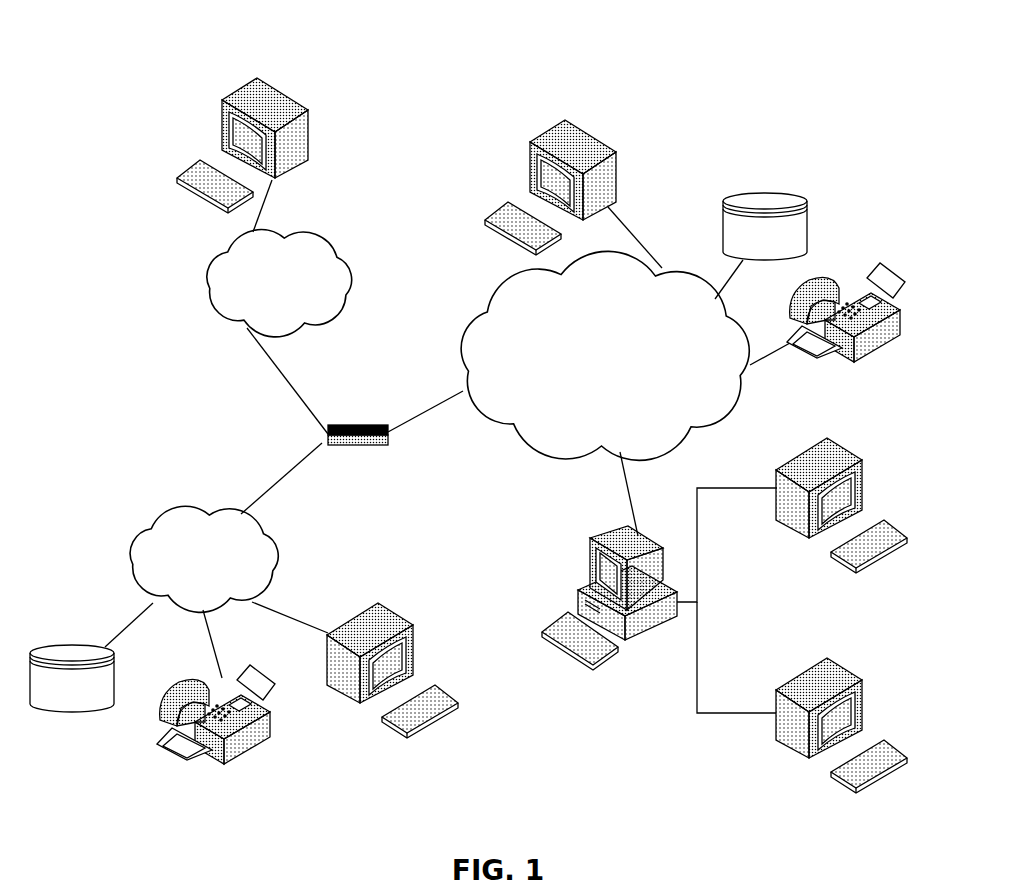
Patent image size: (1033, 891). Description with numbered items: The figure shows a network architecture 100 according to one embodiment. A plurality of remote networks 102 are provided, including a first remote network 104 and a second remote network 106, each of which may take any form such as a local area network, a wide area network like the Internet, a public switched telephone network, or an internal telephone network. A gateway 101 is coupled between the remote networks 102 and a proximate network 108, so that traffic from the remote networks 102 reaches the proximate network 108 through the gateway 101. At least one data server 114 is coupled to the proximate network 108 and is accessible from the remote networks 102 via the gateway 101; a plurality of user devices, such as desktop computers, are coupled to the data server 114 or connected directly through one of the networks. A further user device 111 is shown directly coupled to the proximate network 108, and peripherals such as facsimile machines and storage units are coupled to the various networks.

The architecture 100 is at (145, 58).
The gateway 101 is at (338, 423).
The remote networks 102 is at (180, 344).
The first remote network 104 is at (132, 534).
The second remote network 106 is at (348, 254).
The proximate network 108 is at (712, 423).
The user device 111 is at (618, 152).
The data server 114 is at (590, 553).